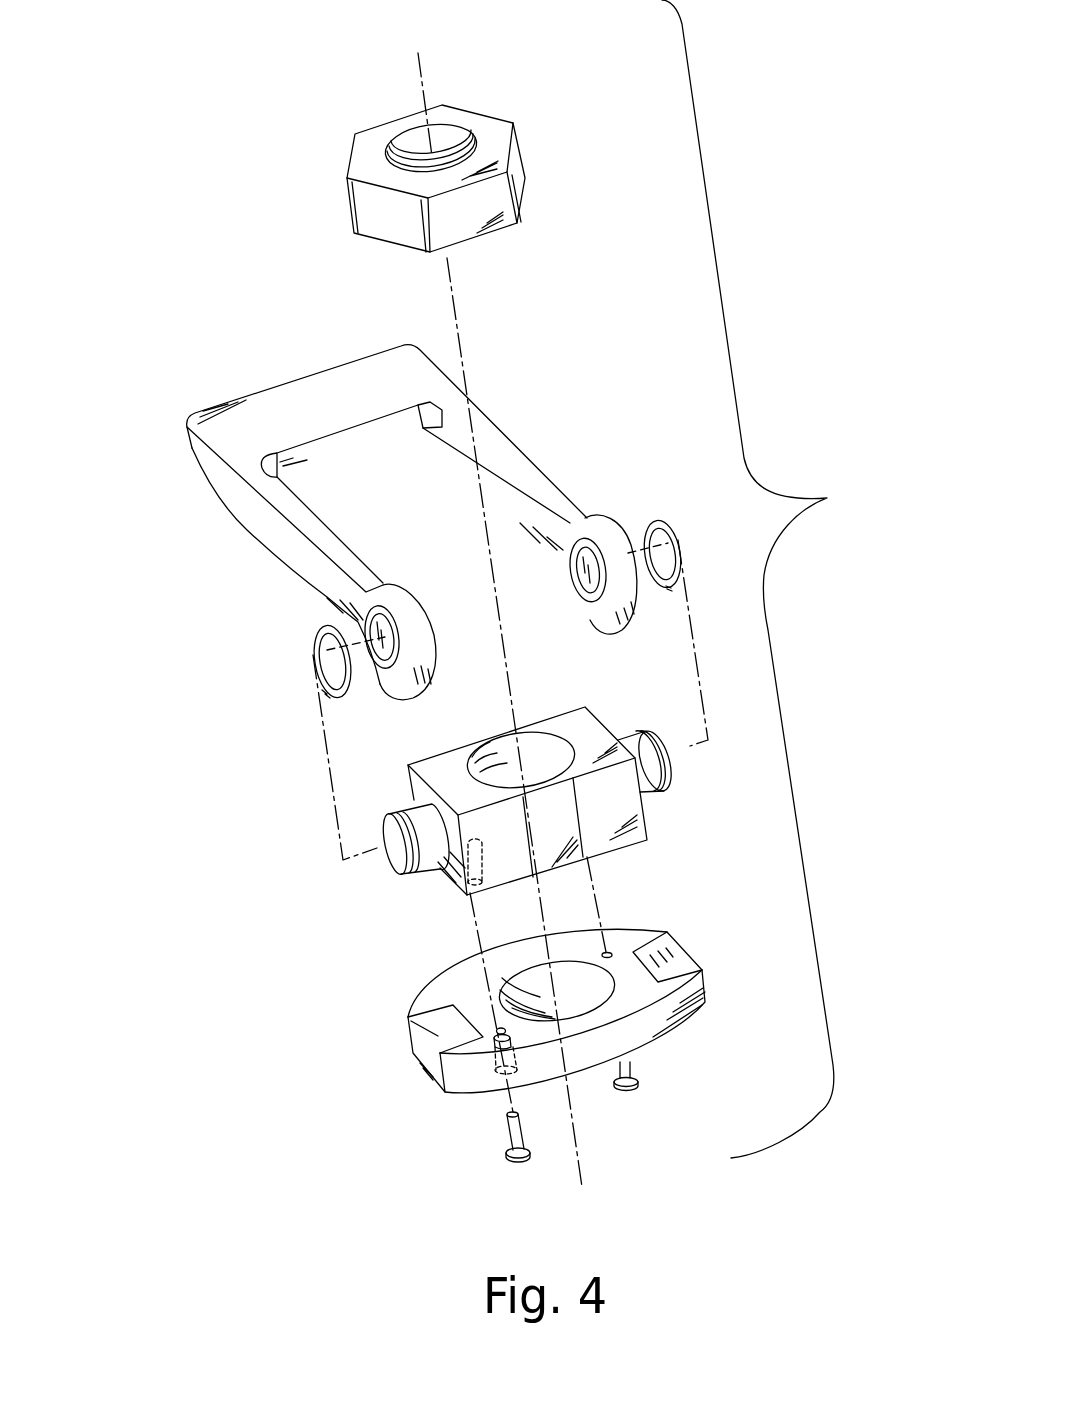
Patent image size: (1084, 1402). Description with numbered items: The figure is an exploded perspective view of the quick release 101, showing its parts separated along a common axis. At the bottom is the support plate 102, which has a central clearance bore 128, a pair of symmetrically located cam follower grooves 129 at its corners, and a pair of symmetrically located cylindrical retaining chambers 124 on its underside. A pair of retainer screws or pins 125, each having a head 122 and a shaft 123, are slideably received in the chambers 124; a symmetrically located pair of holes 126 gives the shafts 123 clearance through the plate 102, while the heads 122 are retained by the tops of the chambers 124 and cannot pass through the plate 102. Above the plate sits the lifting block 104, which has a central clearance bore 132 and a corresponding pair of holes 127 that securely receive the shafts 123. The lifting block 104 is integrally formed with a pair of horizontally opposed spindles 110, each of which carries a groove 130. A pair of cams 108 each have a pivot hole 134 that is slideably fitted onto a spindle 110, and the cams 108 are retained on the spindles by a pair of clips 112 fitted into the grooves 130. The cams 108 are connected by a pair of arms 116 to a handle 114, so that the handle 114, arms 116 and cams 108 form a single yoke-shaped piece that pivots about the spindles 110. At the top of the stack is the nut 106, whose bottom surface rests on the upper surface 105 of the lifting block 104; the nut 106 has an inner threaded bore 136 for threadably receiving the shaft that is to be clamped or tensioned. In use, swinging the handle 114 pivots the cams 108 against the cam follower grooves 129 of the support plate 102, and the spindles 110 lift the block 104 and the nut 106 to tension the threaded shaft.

The quick release 101 is at (829, 500).
The support plate 102 is at (687, 1038).
The lifting block 104 is at (643, 853).
The upper surface 105 is at (442, 773).
The nut 106 is at (532, 150).
The cams 108 is at (412, 617).
The spindles 110 is at (396, 847).
The clips 112 is at (313, 628).
The handle 114 is at (287, 375).
The arms 116 is at (277, 564).
The head 122 is at (507, 1158).
The shaft 123 is at (505, 1128).
The cylindrical retaining chambers 124 is at (517, 1055).
The retainer screws or pins 125 is at (483, 1142).
The holes 126 is at (499, 1029).
The holes 127 is at (470, 890).
The central clearance bore 128 is at (597, 987).
The cam follower grooves 129 is at (438, 1033).
The groove 130 is at (413, 873).
The central clearance bore 132 is at (540, 748).
The pivot hole 134 is at (392, 658).
The inner threaded bore 136 is at (453, 143).